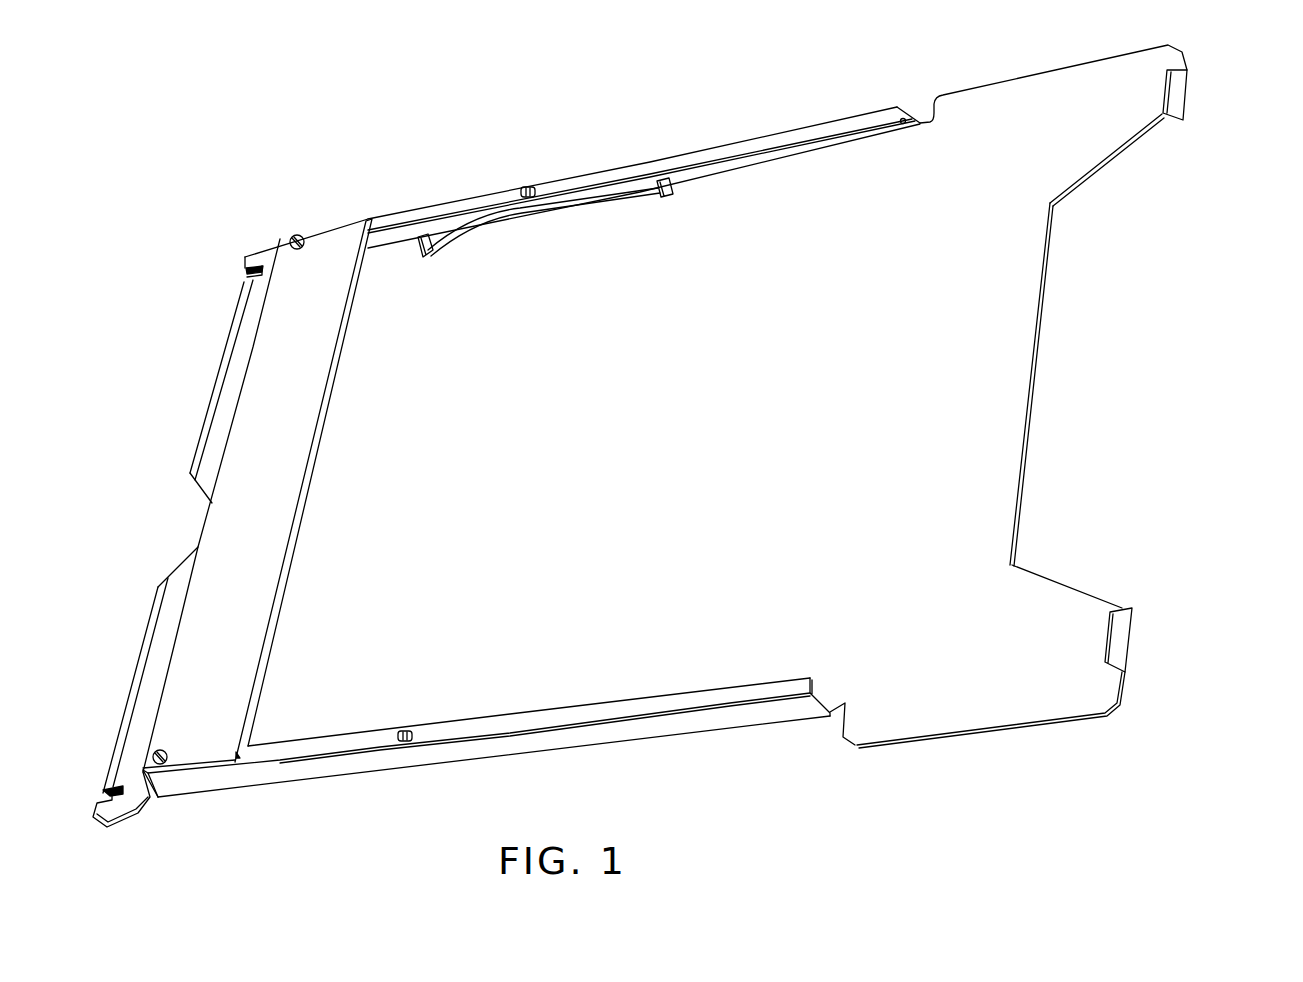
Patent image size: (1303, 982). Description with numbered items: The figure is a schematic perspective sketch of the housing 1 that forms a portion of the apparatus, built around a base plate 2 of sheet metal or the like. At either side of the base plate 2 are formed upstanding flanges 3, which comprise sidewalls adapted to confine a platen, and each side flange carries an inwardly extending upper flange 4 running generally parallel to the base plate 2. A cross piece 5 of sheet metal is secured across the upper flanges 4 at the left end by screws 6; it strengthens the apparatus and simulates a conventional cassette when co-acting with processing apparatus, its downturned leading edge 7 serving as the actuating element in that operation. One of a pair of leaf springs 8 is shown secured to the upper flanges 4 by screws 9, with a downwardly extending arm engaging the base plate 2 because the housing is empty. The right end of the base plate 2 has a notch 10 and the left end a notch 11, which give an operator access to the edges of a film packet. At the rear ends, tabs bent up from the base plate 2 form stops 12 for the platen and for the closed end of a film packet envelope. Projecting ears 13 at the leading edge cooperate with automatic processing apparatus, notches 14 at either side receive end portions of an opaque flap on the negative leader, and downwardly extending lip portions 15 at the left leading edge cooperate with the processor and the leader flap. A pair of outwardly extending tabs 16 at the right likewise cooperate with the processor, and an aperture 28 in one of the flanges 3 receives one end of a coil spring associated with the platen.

The housing 1 is at (1035, 405).
The base plate 2 is at (1014, 660).
The upstanding flanges 3 is at (912, 108).
The upper flanges 4 is at (825, 125).
The cross piece 5 is at (290, 457).
The screws 6 is at (298, 236).
The downturned leading edge 7 is at (155, 778).
The leaf springs 8 is at (643, 190).
The screws 9 is at (530, 186).
The notch 10 is at (1022, 486).
The notch 11 is at (205, 488).
The stops 12 is at (1183, 92).
The projecting ears 13 is at (250, 262).
The notches 14 is at (245, 274).
The lip portions 15 is at (223, 356).
The outwardly extending tabs 16 is at (1040, 88).
The aperture 28 is at (906, 125).